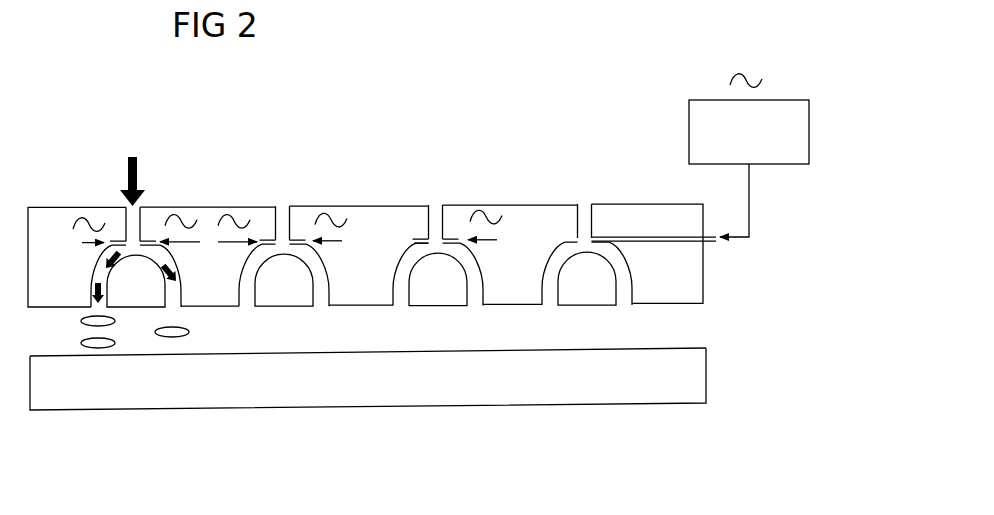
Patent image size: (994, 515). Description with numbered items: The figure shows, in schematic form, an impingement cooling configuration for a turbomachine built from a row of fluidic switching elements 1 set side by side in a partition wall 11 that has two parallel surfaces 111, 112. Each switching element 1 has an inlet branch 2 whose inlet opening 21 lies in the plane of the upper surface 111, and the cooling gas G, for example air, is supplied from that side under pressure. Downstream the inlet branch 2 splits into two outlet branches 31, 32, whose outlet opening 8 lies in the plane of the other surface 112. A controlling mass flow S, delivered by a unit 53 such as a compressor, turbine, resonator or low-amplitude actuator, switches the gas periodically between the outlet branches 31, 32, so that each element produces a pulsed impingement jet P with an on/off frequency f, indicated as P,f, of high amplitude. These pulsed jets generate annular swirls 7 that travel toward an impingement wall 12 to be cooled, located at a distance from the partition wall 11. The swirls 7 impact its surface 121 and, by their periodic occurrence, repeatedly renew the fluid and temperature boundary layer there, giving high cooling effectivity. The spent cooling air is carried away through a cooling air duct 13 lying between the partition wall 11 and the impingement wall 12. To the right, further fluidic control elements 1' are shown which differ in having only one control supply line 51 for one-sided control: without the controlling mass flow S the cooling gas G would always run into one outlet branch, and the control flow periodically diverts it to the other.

The fluidic switching element 1 is at (230, 228).
The fluidic control element 1' is at (573, 220).
The inlet branch 2 is at (133, 224).
The inlet opening 21 is at (283, 202).
The partition wall 11 is at (377, 208).
The surface 111 is at (337, 206).
The surface 112 is at (364, 307).
The outlet branch 31 is at (100, 272).
The outlet branch 32 is at (172, 295).
The control supply line 51 is at (450, 237).
The unit 53 is at (810, 131).
The annular swirls 7 is at (190, 331).
The outlet opening 8 is at (244, 311).
The impingement wall 12 is at (234, 397).
The surface 121 is at (263, 353).
The cooling air duct 13 is at (685, 326).
The cooling gas G is at (140, 167).
The controlling mass flow S is at (288, 243).
The pulsed impingement jet with frequency P,f is at (92, 292).